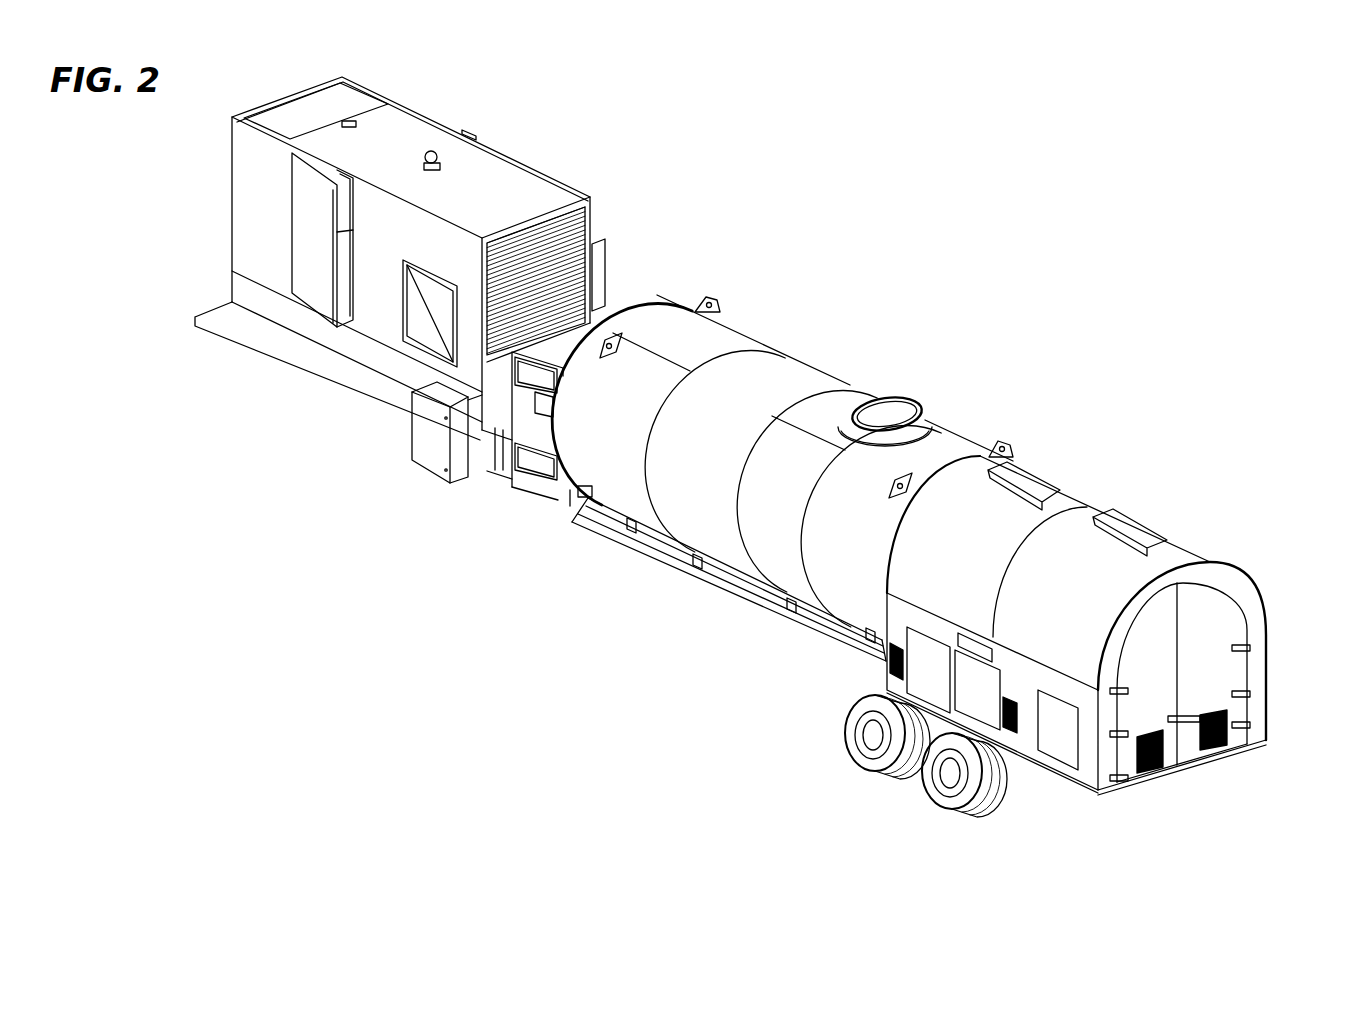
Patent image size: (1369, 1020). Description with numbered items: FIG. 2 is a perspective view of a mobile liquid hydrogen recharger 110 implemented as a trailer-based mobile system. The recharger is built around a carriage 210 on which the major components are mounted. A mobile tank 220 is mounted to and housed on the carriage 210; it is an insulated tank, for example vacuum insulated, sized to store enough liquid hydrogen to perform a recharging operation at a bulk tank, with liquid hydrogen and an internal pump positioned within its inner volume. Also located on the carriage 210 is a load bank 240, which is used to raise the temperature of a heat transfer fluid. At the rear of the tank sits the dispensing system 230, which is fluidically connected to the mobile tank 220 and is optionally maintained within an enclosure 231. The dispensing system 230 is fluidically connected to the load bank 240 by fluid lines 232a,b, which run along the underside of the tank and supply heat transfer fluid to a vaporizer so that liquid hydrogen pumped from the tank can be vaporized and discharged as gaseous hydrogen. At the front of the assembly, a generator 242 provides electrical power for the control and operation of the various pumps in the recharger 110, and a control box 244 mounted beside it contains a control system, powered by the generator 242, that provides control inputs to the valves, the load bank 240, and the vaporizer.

The mobile liquid hydrogen recharger 110 is at (1166, 177).
The carriage 210 is at (589, 552).
The mobile tank 220 is at (737, 358).
The dispensing system 230 is at (1285, 594).
The enclosure 231 is at (1145, 570).
The fluid lines 232a,b is at (762, 597).
The load bank 240 is at (535, 443).
The generator 242 is at (531, 190).
The control box 244 is at (425, 447).